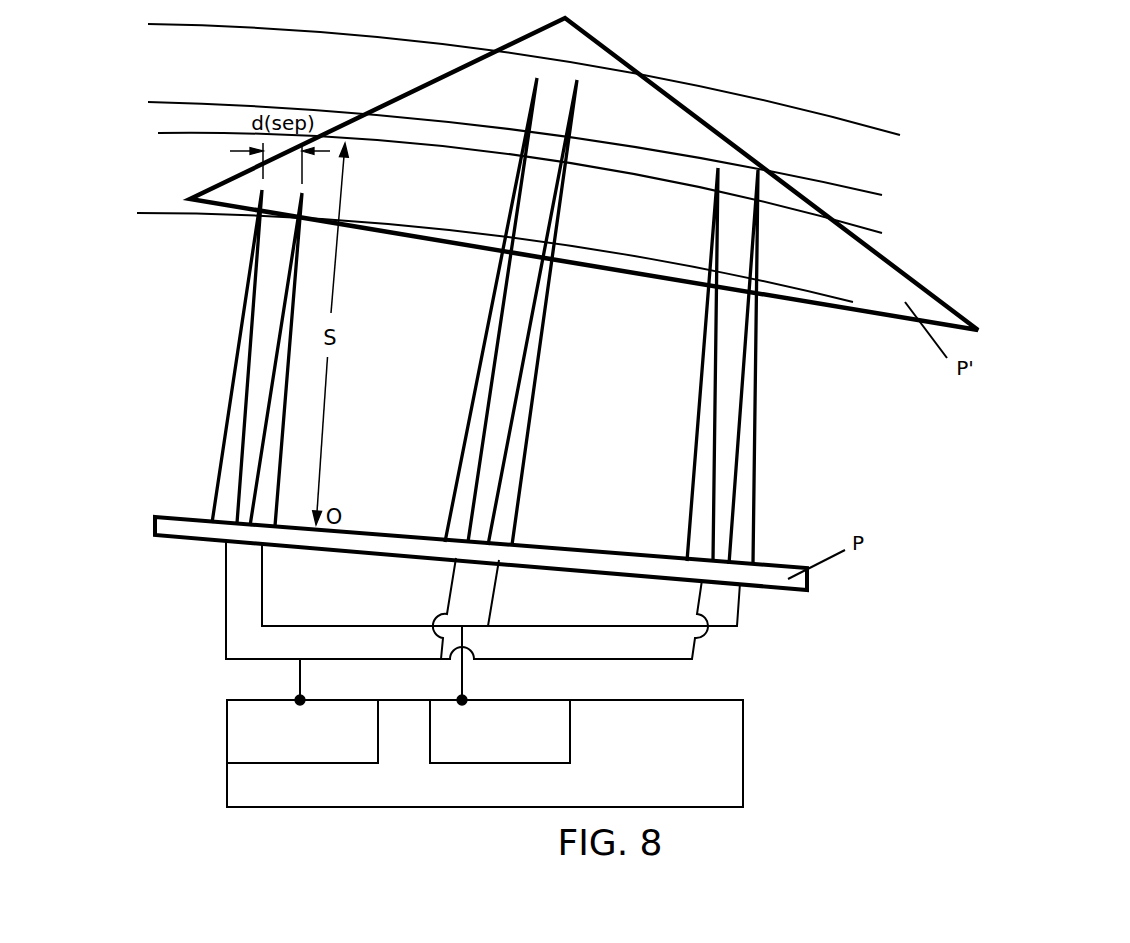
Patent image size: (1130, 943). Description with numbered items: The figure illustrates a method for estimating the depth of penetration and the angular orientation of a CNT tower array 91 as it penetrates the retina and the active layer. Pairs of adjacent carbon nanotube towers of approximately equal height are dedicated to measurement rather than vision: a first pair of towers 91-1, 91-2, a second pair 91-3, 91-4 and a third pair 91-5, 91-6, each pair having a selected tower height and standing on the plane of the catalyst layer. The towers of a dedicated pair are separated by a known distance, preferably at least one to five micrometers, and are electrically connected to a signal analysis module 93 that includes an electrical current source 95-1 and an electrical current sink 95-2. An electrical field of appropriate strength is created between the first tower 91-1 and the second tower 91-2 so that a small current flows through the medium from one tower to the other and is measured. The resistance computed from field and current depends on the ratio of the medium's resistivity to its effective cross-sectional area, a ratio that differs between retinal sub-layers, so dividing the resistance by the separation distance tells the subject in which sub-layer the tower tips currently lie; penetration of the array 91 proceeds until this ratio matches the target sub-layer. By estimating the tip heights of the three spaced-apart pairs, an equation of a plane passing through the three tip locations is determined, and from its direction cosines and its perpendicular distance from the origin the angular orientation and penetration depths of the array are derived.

The CNT tower array 91 is at (1043, 125).
The first dedicated CNT tower 91-1 is at (247, 292).
The second dedicated CNT tower 91-2 is at (283, 315).
The third dedicated CNT tower 91-3 is at (498, 293).
The fourth dedicated CNT tower 91-4 is at (537, 328).
The fifth dedicated CNT tower 91-5 is at (713, 292).
The sixth dedicated CNT tower 91-6 is at (753, 313).
The signal analysis module 93 is at (715, 770).
The electrical current source 95-1 is at (238, 752).
The electrical current sink 95-2 is at (552, 747).